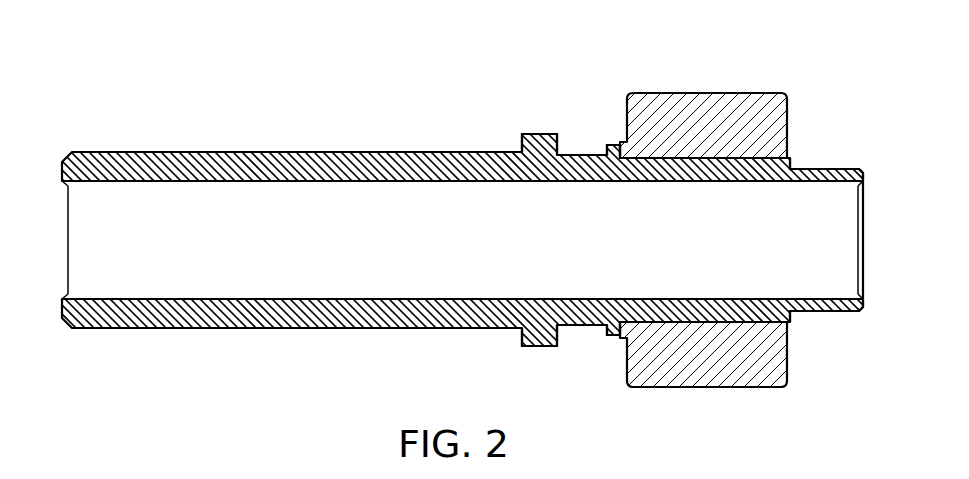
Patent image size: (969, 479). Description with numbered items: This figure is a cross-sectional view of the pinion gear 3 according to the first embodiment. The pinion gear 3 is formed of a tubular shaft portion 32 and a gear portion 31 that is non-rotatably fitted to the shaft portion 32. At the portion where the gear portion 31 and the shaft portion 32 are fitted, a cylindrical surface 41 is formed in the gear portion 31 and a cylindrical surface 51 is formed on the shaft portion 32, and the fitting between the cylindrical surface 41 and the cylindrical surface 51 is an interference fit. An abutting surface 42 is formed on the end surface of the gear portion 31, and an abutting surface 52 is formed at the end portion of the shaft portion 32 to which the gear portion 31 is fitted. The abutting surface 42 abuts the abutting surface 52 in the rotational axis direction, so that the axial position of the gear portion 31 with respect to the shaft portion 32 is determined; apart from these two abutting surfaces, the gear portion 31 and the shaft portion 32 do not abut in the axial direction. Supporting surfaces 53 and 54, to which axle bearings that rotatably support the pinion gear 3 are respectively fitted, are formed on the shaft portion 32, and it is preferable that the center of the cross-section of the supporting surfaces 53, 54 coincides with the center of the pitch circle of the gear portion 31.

The pinion gear 3 is at (484, 209).
The gear portion 31 is at (742, 108).
The shaft portion 32 is at (302, 156).
The cylindrical surface 41 is at (701, 165).
The abutting surface 42 is at (617, 334).
The cylindrical surface 51 is at (680, 152).
The abutting surface 52 is at (621, 146).
The supporting surface 53 is at (824, 168).
The supporting surface 54 is at (501, 153).